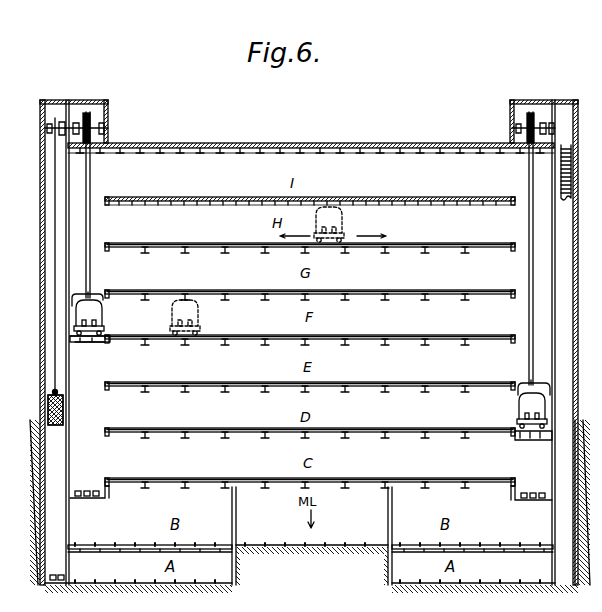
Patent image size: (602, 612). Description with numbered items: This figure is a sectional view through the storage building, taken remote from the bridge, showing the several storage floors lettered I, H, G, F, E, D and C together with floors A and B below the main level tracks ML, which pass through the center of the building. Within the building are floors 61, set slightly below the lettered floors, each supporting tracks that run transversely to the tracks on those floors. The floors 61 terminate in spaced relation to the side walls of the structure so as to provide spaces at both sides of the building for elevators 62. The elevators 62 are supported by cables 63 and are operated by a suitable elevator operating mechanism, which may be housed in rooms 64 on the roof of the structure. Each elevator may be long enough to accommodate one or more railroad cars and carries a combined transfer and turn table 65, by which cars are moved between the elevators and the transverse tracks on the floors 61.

The floors 61 is at (425, 192).
The elevators 62 is at (103, 290).
The cables 63 is at (92, 190).
The rooms 64 is at (97, 112).
The combined transfer and turn table 65 is at (355, 231).